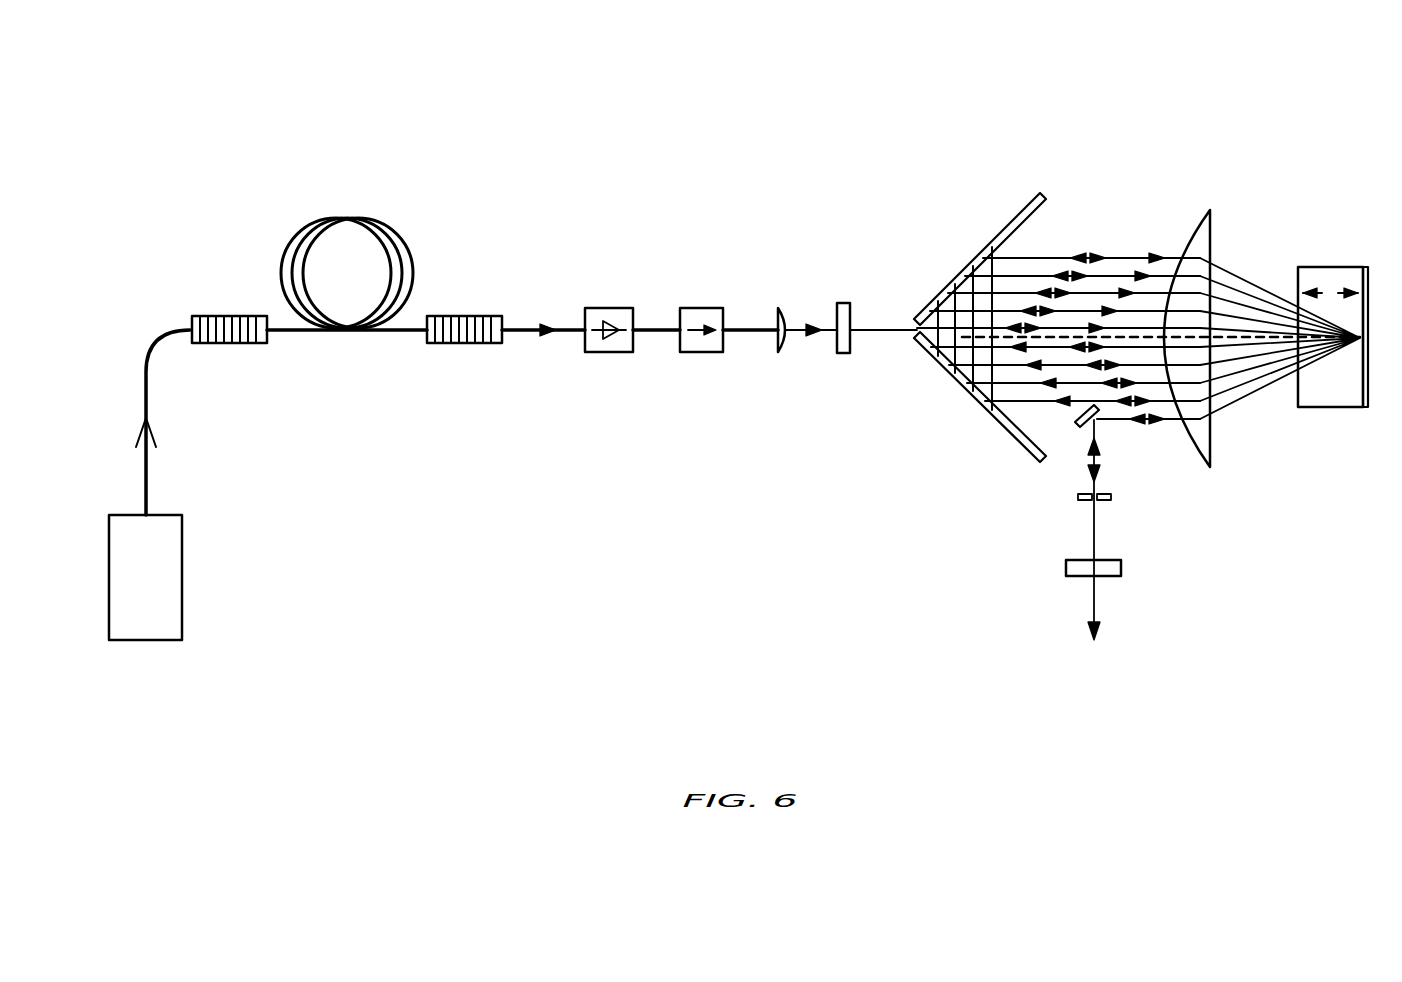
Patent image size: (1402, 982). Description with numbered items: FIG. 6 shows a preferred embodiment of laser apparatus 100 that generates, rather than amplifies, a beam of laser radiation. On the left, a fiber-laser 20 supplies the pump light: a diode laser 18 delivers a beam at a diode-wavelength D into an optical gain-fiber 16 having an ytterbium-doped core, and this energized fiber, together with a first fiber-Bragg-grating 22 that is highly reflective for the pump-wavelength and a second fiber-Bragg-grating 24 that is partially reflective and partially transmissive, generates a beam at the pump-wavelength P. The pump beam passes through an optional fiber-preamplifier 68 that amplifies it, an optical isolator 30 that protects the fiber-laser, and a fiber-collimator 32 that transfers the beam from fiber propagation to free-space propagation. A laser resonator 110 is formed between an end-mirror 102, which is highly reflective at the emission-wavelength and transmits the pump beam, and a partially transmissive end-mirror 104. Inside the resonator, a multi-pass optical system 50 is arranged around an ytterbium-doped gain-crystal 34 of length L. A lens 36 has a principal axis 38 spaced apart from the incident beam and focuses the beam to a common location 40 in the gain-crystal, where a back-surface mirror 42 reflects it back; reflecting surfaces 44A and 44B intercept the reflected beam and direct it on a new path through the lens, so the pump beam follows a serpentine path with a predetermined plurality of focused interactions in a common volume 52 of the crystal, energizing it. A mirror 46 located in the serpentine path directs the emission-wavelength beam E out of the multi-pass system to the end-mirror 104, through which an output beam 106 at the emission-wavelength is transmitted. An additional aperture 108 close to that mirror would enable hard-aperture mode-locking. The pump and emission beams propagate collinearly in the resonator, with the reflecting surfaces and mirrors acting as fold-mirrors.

The optical gain-fiber 16 is at (347, 218).
The diode laser 18 is at (182, 615).
The fiber-laser 20 is at (522, 88).
The first fiber-Bragg-grating 22 is at (253, 315).
The second fiber-Bragg-grating 24 is at (452, 315).
The second optical isolator 30 is at (700, 305).
The fiber-collimator 32 is at (770, 305).
The ytterbium-doped gain-crystal 34 is at (1318, 258).
The lens 36 is at (1203, 210).
The principal axis 38 is at (1265, 335).
The common location 40 is at (1360, 345).
The back-surface mirror 42 is at (1366, 265).
The reflecting surface 44A is at (1000, 220).
The reflecting surface 44B is at (1000, 405).
The mirror 46 is at (1092, 430).
The optical system 50 is at (964, 88).
The common volume 52 is at (1348, 353).
The fiber-preamplifier 68 is at (585, 305).
The laser apparatus 100 is at (1025, 692).
The end-mirror 102 is at (850, 340).
The end-mirror 104 is at (1078, 558).
The output beam 106 is at (1100, 595).
The aperture 108 is at (1113, 497).
The laser resonator 110 is at (872, 323).
The diode-wavelength D is at (152, 422).
The pump-wavelength P is at (543, 320).
The emission-wavelength E is at (1102, 252).
The length of the crystal L is at (1330, 293).